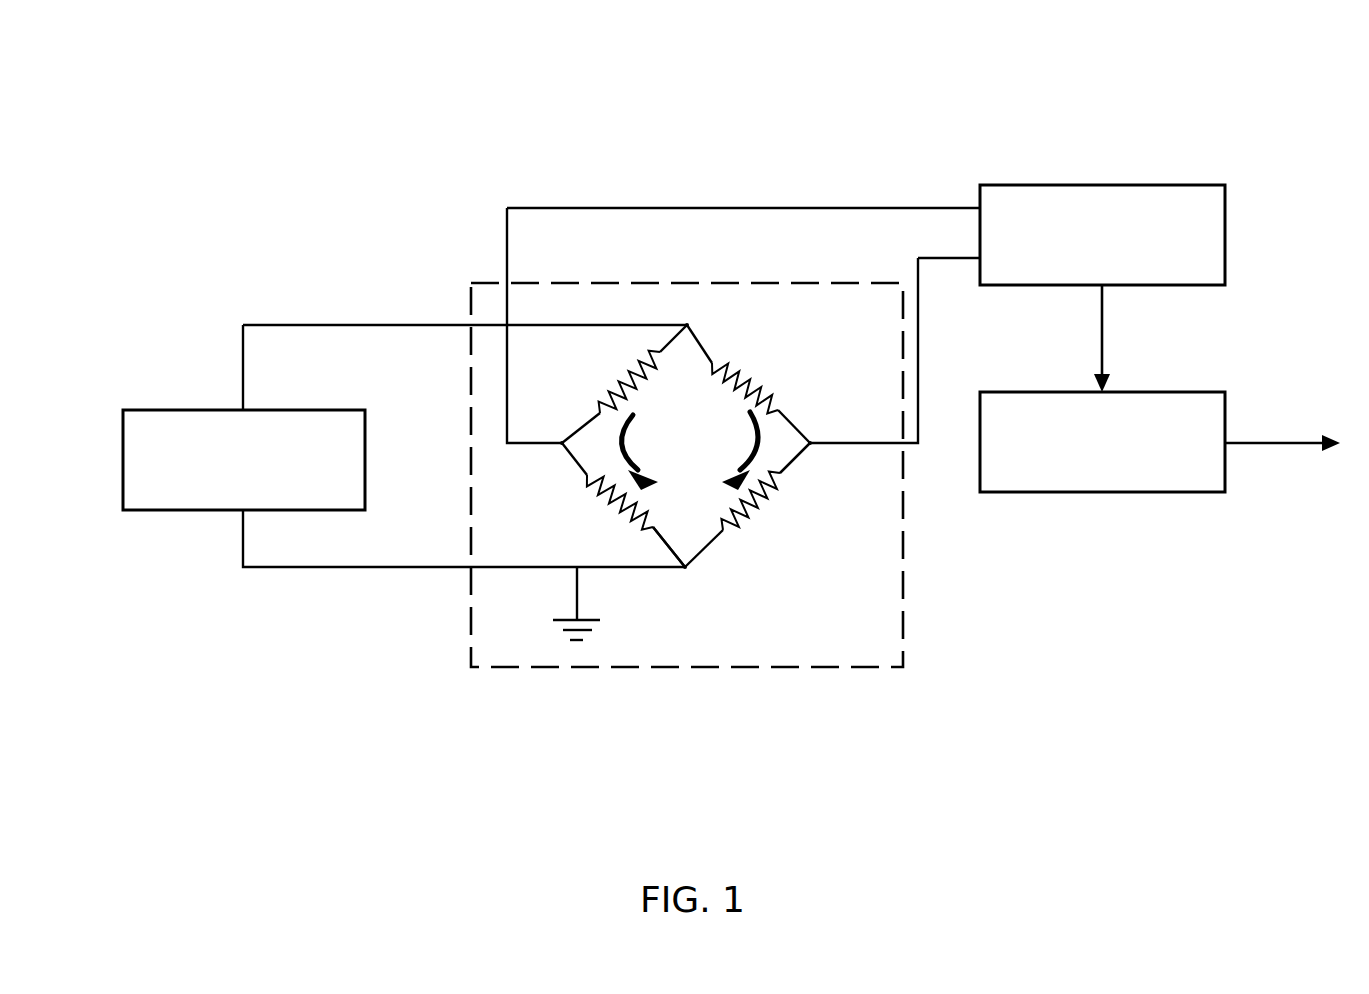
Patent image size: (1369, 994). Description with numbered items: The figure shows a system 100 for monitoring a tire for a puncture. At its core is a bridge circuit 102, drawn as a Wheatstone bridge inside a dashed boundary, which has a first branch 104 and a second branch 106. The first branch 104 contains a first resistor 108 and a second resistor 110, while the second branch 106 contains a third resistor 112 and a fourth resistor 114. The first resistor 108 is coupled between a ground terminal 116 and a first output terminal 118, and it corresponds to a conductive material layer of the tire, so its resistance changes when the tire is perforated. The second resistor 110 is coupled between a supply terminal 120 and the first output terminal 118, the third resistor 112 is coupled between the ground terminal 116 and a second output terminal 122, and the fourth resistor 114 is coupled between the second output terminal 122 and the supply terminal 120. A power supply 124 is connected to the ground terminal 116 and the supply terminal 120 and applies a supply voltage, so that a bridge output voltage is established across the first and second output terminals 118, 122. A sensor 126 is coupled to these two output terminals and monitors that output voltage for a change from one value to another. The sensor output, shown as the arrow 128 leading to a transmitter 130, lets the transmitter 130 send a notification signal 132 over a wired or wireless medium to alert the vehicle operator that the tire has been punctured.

The system 100 is at (1198, 90).
The bridge circuit 102 is at (715, 282).
The first branch 104 is at (795, 468).
The second branch 106 is at (670, 562).
The first resistor 108 is at (758, 525).
The second resistor 110 is at (748, 378).
The third resistor 112 is at (595, 498).
The fourth resistor 114 is at (607, 377).
The ground terminal 116 is at (687, 570).
The first output terminal 118 is at (812, 442).
The supply terminal 120 is at (687, 325).
The second output terminal 122 is at (560, 445).
The power supply 124 is at (262, 408).
The sensor 126 is at (1227, 185).
The sensor output signal 128 is at (1108, 358).
The transmitter 130 is at (1225, 392).
The notification signal 132 is at (1263, 442).